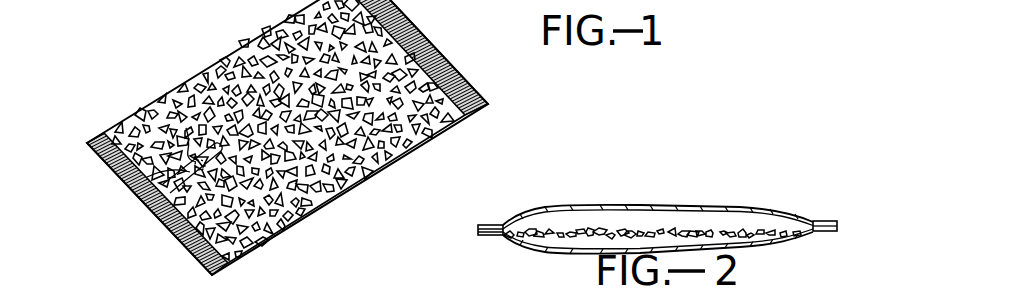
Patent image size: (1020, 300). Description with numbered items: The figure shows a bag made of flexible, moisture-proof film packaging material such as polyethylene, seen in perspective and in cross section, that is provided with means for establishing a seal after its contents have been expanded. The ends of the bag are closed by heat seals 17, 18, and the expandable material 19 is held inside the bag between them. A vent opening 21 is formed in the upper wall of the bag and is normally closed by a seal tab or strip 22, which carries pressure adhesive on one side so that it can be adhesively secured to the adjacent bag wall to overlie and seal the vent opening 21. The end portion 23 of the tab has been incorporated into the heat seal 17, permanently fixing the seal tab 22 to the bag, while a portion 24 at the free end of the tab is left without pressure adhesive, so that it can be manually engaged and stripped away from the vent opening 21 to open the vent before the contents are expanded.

In FIG. 1, the heat seal 17 is at (112, 170).
In FIG. 2, the heat seal 17 is at (488, 236).
In FIG. 1, the heat seal 18 is at (437, 62).
In FIG. 2, the heat seal 18 is at (828, 222).
In FIG. 1, the expandable material 19 is at (300, 204).
In FIG. 1, the vent opening 21 is at (162, 98).
In FIG. 2, the vent opening 21 is at (652, 264).
In FIG. 1, the seal tab 22 is at (147, 177).
In FIG. 1, the end portion of the tab 23 is at (153, 213).
In FIG. 1, the portion at the free end of the tab 24 is at (308, 296).
In FIG. 2, the portion at the free end of the tab 24 is at (567, 212).